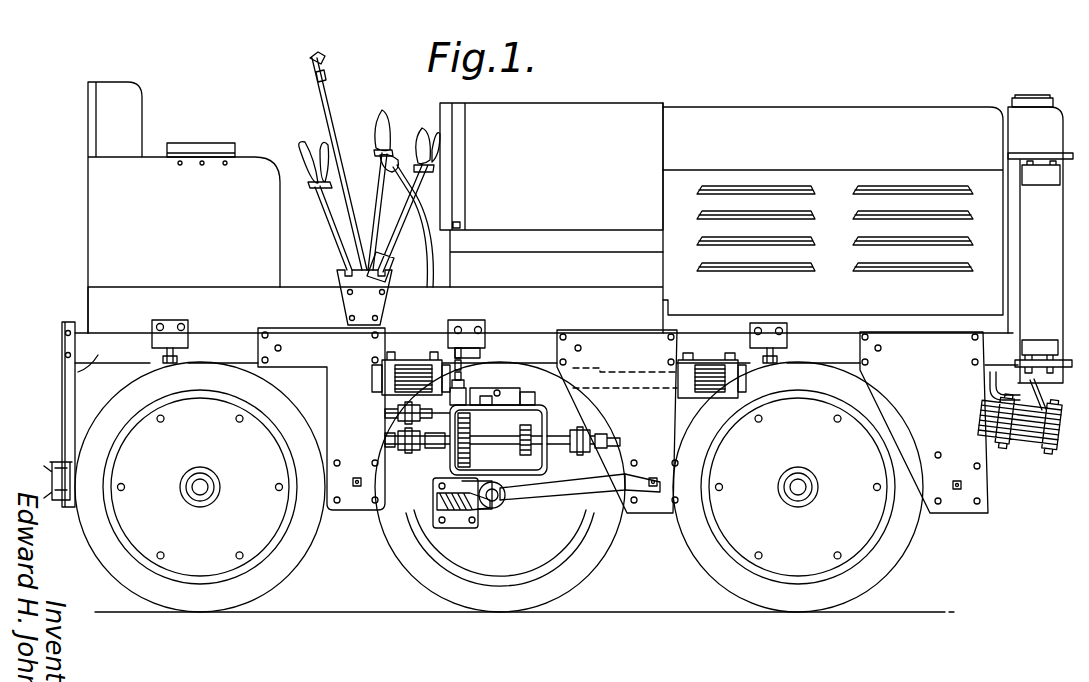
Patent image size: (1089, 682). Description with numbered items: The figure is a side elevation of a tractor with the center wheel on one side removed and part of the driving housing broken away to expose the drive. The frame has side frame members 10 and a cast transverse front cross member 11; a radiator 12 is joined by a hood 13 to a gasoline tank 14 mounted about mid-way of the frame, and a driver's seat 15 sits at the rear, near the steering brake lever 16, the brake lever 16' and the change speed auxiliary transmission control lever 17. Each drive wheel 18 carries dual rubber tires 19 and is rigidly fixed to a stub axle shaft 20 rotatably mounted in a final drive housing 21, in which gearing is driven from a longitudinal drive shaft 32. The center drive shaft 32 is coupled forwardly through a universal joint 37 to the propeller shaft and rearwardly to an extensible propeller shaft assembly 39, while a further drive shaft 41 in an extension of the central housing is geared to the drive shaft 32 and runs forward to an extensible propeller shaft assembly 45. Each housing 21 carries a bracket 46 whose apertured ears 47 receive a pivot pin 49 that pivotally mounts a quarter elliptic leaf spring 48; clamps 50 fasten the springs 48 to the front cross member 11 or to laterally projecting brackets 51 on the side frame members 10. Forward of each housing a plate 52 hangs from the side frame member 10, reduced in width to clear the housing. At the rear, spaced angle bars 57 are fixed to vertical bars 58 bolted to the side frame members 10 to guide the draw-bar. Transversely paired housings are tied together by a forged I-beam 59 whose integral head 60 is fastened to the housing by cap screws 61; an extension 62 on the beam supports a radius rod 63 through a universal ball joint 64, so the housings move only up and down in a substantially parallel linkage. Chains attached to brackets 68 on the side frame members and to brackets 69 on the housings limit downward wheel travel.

The side frame member 10 is at (75, 372).
The transverse front cross member 11 is at (1030, 440).
The radiator 12 is at (1035, 200).
The hood 13 is at (838, 115).
The gasoline tank 14 is at (583, 115).
The driver's seat 15 is at (96, 192).
The steering brake lever 16 is at (338, 149).
The brake lever 16' is at (403, 187).
The change speed auxiliary transmission control lever 17 is at (378, 122).
The drive wheel 18 is at (147, 538).
The dual rubber tires 19 is at (250, 590).
The stub axle shaft 20 is at (200, 487).
The final drive housing 21 is at (548, 412).
The drive shaft 32 is at (518, 455).
The universal joint 37 is at (585, 430).
The extensible propeller shaft assembly 39 is at (395, 444).
The drive shaft 41 is at (387, 399).
The extensible propeller shaft assembly 45 is at (392, 438).
The bracket 46 is at (470, 390).
The apertured ears 47 is at (490, 388).
The quarter elliptic leaf spring 48 is at (540, 365).
The pivot pin 49 is at (505, 385).
The clamp 50 is at (382, 377).
The bracket 51 is at (405, 352).
The plate 52 is at (355, 505).
The angle bar 57 is at (44, 476).
The vertical bar 58 is at (62, 344).
The I-beam 59 is at (436, 520).
The head 60 is at (453, 520).
The cap screws 61 is at (468, 525).
The extension 62 is at (483, 506).
The radius rod 63 is at (580, 500).
The universal ball joint 64 is at (500, 497).
The bracket 68 is at (462, 325).
The bracket 69 is at (442, 338).